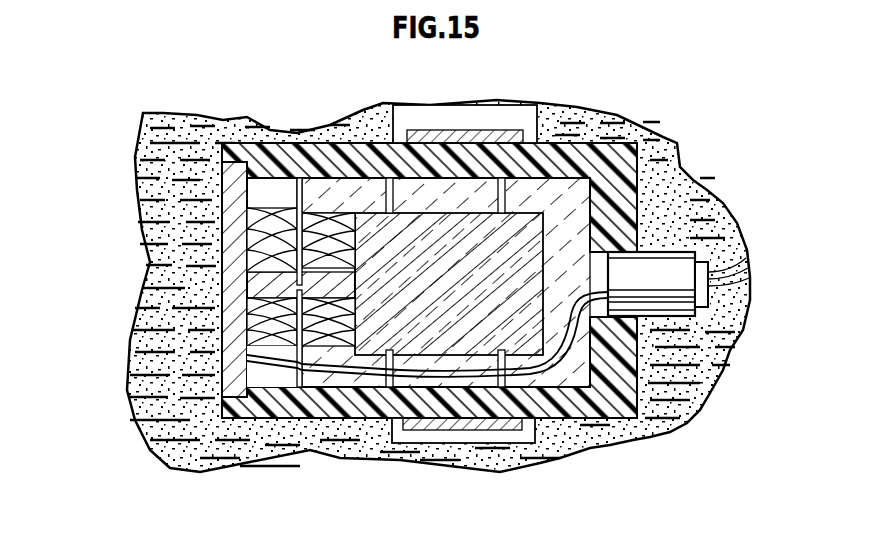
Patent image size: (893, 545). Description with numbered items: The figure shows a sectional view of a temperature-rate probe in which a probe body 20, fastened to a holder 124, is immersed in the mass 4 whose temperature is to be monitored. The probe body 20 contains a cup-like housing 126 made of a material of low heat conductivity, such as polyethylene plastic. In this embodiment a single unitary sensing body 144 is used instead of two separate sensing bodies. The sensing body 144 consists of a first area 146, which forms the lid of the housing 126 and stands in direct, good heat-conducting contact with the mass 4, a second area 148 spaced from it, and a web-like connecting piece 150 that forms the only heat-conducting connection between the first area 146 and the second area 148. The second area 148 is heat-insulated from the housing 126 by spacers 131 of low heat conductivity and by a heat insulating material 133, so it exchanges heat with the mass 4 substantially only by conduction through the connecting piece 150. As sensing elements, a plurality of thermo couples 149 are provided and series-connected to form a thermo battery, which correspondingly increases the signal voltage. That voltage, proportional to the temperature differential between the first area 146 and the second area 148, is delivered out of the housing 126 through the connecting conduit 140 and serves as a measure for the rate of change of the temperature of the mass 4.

The mass 4 is at (157, 437).
The probe body 20 is at (613, 425).
The holder 124 is at (523, 117).
The cup-like housing 126 is at (733, 347).
The spacers 131 is at (373, 200).
The heat insulating material 133 is at (573, 243).
The connecting conduit 140 is at (636, 408).
The unitary sensing body 144 is at (560, 220).
The first area 146 is at (233, 337).
The second area 148 is at (525, 343).
The thermo couples 149 is at (338, 350).
The web-like connecting piece 150 is at (250, 283).